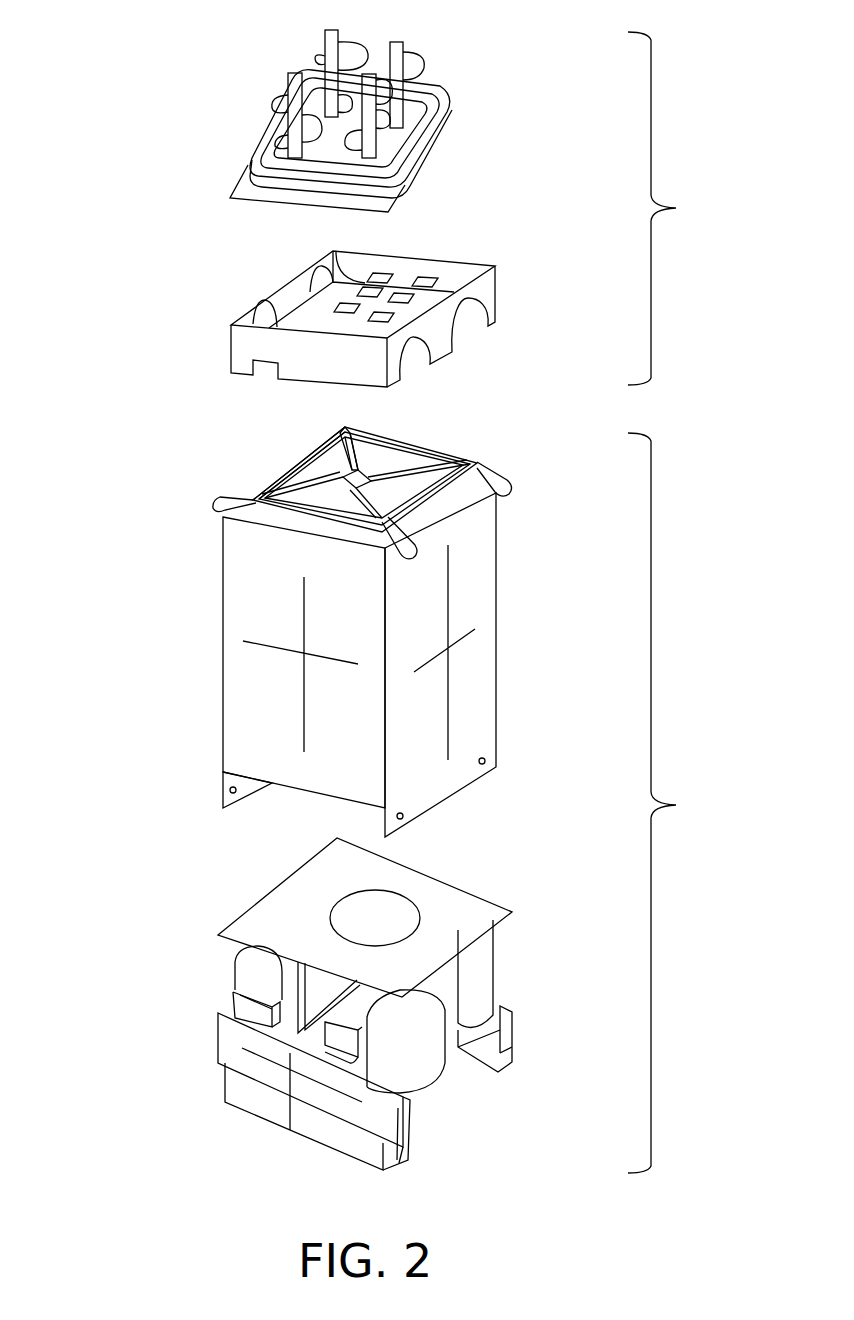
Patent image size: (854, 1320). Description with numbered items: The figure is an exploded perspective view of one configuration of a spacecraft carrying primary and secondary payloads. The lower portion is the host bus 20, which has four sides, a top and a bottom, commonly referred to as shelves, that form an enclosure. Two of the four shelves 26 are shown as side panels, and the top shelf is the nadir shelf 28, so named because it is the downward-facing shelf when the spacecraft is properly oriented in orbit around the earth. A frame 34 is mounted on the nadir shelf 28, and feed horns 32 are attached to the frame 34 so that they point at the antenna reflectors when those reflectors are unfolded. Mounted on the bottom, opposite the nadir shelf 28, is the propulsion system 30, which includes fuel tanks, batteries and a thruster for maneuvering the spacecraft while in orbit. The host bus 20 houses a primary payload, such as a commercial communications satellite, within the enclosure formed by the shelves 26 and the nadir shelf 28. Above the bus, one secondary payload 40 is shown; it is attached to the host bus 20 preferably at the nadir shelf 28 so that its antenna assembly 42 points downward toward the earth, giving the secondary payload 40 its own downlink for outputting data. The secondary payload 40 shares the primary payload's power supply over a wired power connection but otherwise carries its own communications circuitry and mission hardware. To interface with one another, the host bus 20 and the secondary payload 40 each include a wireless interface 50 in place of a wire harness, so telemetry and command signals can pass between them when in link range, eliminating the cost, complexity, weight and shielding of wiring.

The host bus 20 is at (672, 803).
The shelves 26 is at (468, 612).
The nadir shelf 28 is at (327, 463).
The propulsion system 30 is at (170, 896).
The feed horns 32 is at (497, 470).
The frame 34 is at (265, 472).
The secondary payload 40 is at (672, 208).
The antenna assembly 42 is at (224, 61).
The wireless interface 50 is at (428, 283).